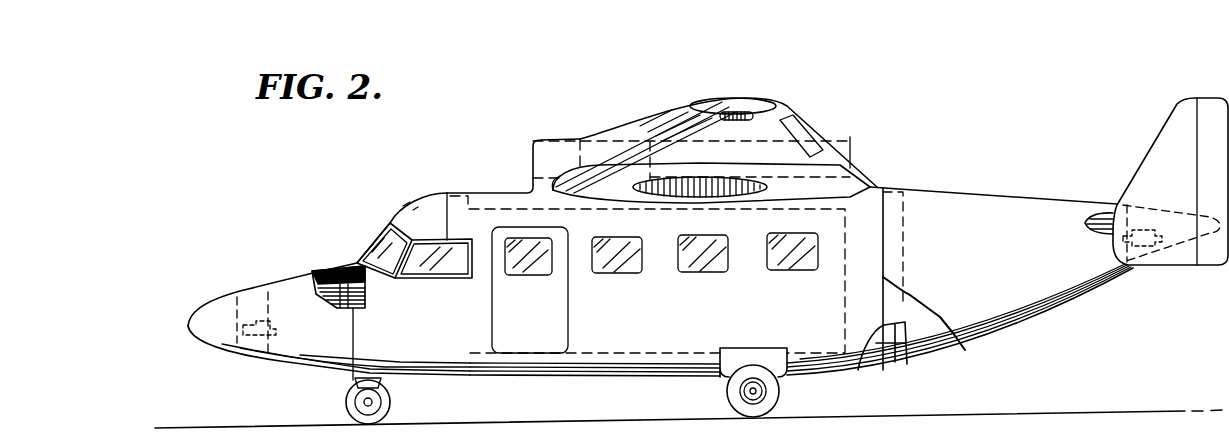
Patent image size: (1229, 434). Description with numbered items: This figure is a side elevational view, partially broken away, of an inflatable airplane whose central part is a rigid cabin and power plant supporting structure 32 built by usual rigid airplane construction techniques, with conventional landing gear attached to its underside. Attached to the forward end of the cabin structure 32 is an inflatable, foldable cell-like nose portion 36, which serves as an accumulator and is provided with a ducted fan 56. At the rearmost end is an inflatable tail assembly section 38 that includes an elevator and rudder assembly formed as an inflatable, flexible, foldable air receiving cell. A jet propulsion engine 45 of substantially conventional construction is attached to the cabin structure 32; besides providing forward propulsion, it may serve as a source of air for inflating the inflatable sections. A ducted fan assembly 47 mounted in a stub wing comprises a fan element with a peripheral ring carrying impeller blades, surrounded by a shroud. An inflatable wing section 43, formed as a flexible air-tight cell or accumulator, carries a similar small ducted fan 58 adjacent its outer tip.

The cabin and power plant supporting structure 32 is at (636, 315).
The inflatable nose portion 36 is at (319, 338).
The inflatable tail assembly section 38 is at (1003, 251).
The inflatable wing section 43 is at (789, 104).
The jet propulsion engine 45 is at (600, 150).
The ducted fan assembly 47 is at (712, 190).
The ducted fan 56 is at (250, 297).
The ducted fan 58 is at (769, 99).